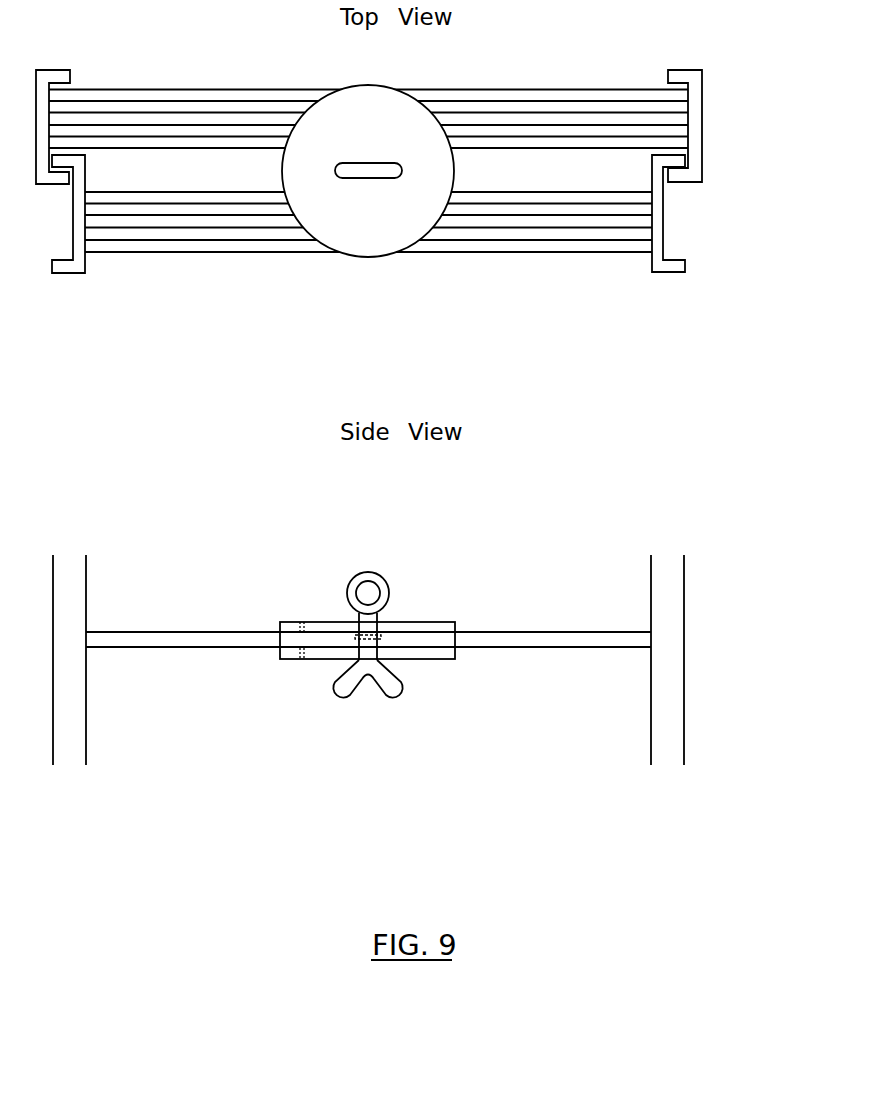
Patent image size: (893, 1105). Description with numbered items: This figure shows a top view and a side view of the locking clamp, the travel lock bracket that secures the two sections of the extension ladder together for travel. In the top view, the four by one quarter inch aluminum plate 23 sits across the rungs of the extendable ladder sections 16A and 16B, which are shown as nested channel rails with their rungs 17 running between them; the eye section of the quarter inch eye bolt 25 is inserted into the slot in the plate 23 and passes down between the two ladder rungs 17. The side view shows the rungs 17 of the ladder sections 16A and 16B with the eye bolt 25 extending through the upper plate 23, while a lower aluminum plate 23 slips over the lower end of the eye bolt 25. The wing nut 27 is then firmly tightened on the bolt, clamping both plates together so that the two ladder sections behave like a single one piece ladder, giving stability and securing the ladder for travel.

The extendable ladder 16A is at (685, 272).
The extendable ladder section 16B is at (702, 80).
The slats 17 is at (663, 123).
The aluminum plate 23 is at (403, 128).
The eye bolt 25 is at (343, 178).
The wing nut 27 is at (403, 688).